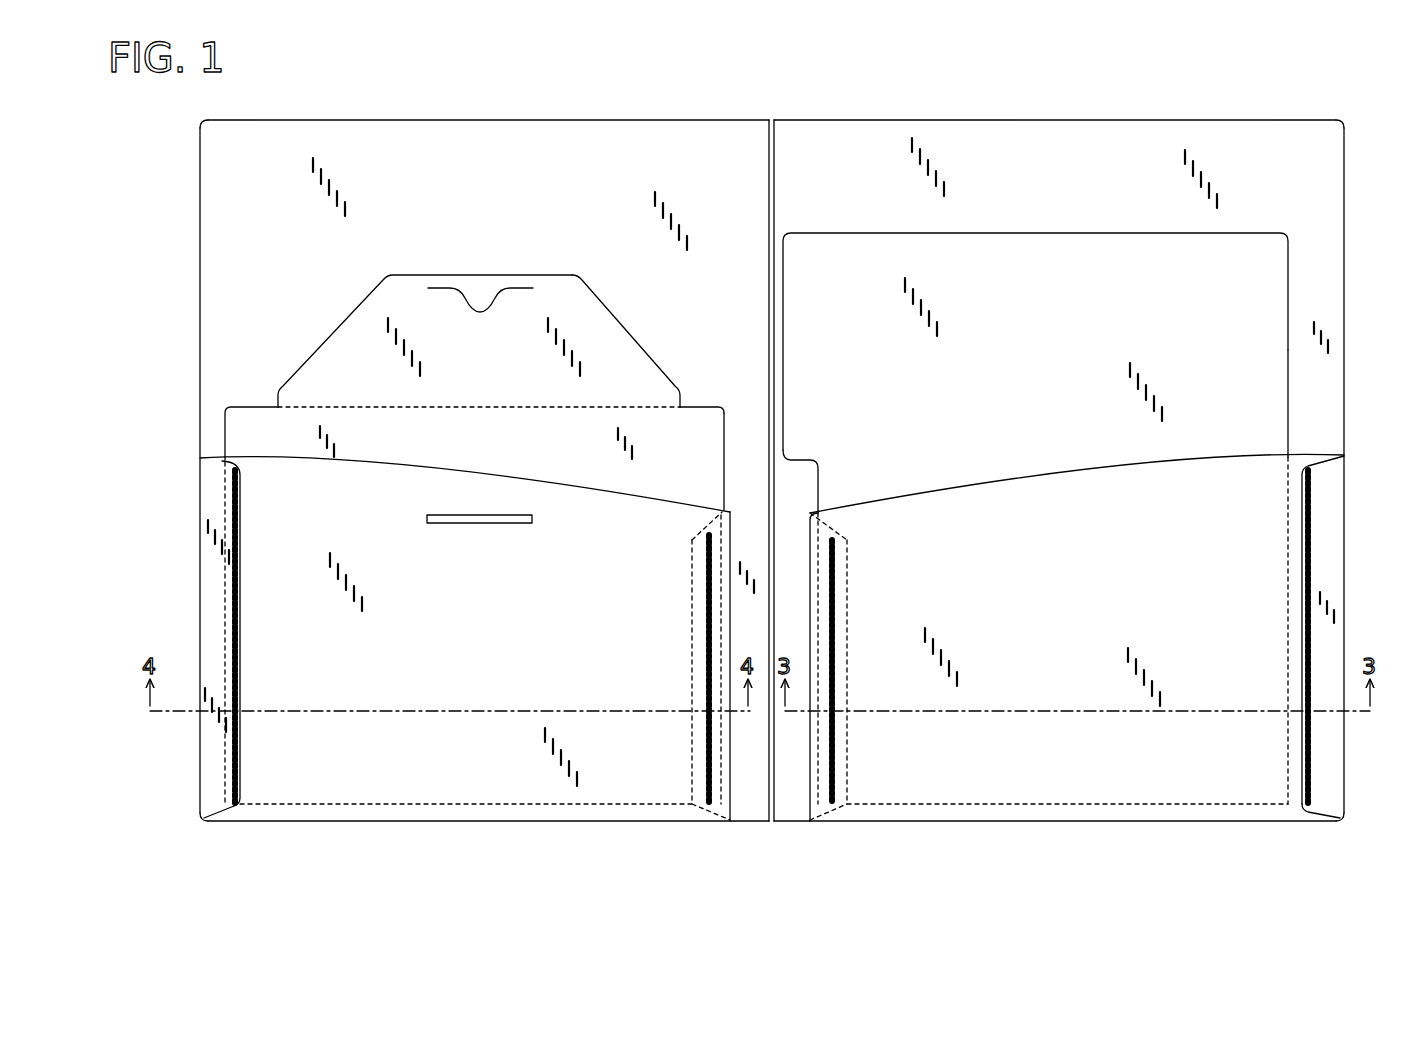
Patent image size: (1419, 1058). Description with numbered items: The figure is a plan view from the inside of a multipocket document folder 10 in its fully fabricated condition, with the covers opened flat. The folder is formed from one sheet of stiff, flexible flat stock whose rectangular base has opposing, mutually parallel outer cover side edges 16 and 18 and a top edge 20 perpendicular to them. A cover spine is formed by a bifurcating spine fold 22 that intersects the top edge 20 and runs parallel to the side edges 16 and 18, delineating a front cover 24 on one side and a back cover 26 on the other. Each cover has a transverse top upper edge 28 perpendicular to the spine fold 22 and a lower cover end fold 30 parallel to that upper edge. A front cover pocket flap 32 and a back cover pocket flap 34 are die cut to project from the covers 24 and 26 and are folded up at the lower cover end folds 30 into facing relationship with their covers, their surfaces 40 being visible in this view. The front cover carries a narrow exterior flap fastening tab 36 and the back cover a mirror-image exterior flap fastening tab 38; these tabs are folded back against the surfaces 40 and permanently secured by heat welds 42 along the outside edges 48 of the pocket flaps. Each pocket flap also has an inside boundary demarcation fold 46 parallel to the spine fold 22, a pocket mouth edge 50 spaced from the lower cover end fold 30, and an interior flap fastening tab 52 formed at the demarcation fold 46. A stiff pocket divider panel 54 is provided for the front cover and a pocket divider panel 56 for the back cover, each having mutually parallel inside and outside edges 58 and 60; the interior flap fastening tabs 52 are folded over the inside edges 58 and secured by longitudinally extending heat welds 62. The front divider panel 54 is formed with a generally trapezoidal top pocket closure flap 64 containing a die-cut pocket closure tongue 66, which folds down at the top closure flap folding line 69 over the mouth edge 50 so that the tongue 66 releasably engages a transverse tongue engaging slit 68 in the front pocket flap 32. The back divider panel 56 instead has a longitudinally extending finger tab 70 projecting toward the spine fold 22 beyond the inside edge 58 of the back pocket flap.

The multipocket document folder 10 is at (165, 336).
The outer cover side edge 16 is at (198, 232).
The outer cover side edge 18 is at (1346, 272).
The top edge 20 is at (712, 112).
The spine fold 22 is at (780, 186).
The front cover 24 is at (495, 176).
The back cover 26 is at (1130, 220).
The transverse top upper edge 28 is at (468, 110).
The lower cover end fold 30 is at (472, 826).
The front cover pocket flap 32 is at (498, 646).
The back cover pocket flap 34 is at (1098, 594).
The exterior flap fastening tab 36 is at (210, 768).
The exterior flap fastening tab 38 is at (1328, 758).
The surfaces of the pocket cover flaps 40 is at (383, 762).
The heat welds 42 is at (245, 654).
The inside boundary demarcation fold 46 is at (810, 772).
The outside edge 48 is at (200, 593).
The pocket mouth edge 50 is at (525, 478).
The interior flap fastening tab 52 is at (692, 752).
The pocket divider panel 54 is at (675, 352).
The pocket divider panel 56 is at (1040, 218).
The inside edge 58 is at (722, 442).
The outside edge 60 is at (222, 434).
The heat welds 62 is at (690, 636).
The top pocket closure flap 64 is at (583, 323).
The pocket closure tongue 66 is at (478, 300).
The tongue engaging slit 68 is at (458, 520).
The top closure flap folding line 69 is at (390, 413).
The finger tab 70 is at (798, 376).